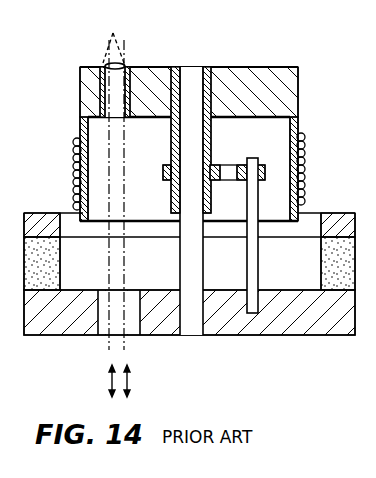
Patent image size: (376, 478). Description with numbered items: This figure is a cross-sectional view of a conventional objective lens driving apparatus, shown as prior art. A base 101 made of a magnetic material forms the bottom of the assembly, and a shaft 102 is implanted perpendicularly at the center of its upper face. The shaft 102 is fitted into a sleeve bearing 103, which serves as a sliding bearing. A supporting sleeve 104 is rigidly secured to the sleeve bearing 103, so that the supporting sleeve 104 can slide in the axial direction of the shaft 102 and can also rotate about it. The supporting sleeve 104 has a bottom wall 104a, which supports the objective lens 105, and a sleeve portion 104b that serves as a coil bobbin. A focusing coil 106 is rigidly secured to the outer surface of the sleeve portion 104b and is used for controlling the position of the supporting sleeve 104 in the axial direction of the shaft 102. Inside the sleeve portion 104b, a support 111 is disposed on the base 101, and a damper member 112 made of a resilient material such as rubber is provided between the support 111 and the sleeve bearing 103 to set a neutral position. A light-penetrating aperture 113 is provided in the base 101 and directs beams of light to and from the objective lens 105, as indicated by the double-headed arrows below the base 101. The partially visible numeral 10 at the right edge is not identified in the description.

The base 101 is at (292, 336).
The shaft 102 is at (181, 259).
The sleeve bearing 103 is at (208, 80).
The supporting sleeve 104 is at (219, 120).
The bottom wall 104a is at (150, 70).
The sleeve portion 104b is at (299, 133).
The objective lens 105 is at (109, 60).
The focusing coil 106 is at (305, 172).
The support 111 is at (257, 264).
The damper member 112 is at (262, 139).
The light-penetrating aperture 113 is at (100, 336).
The device 10 is at (369, 376).